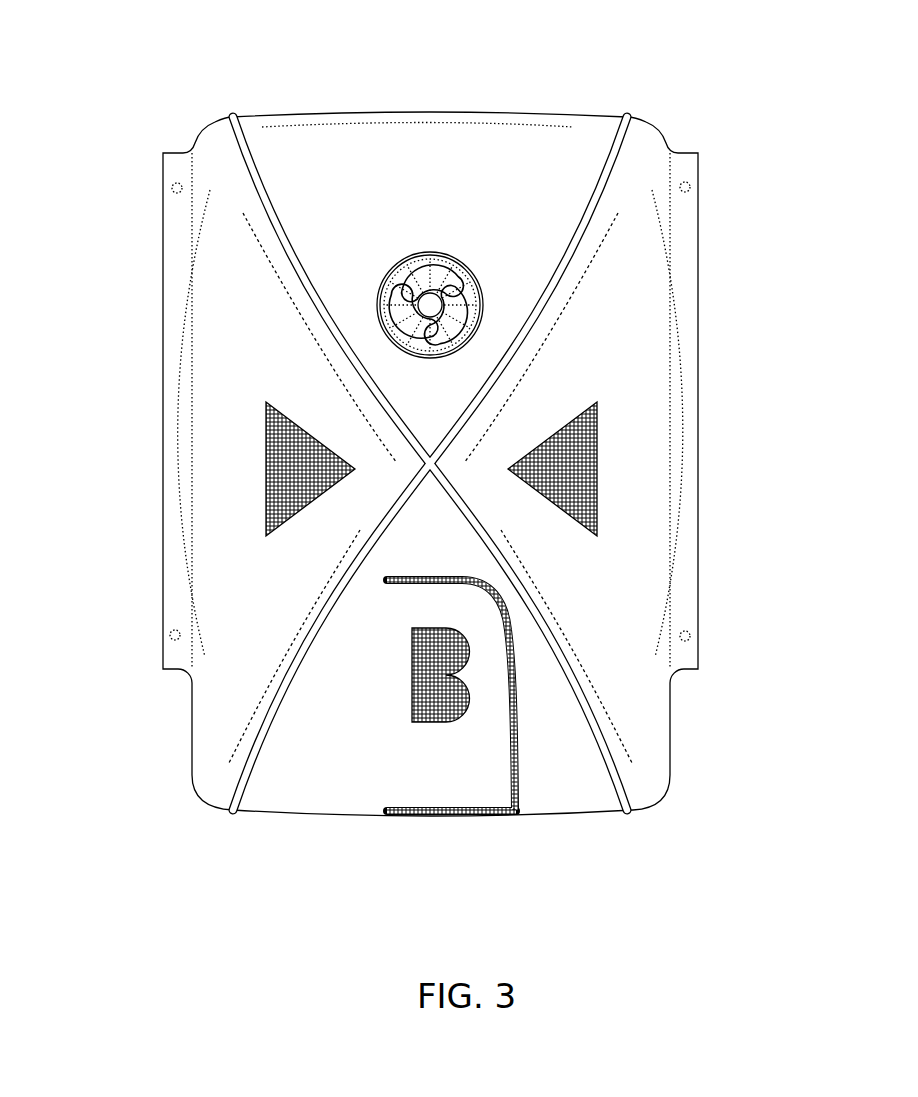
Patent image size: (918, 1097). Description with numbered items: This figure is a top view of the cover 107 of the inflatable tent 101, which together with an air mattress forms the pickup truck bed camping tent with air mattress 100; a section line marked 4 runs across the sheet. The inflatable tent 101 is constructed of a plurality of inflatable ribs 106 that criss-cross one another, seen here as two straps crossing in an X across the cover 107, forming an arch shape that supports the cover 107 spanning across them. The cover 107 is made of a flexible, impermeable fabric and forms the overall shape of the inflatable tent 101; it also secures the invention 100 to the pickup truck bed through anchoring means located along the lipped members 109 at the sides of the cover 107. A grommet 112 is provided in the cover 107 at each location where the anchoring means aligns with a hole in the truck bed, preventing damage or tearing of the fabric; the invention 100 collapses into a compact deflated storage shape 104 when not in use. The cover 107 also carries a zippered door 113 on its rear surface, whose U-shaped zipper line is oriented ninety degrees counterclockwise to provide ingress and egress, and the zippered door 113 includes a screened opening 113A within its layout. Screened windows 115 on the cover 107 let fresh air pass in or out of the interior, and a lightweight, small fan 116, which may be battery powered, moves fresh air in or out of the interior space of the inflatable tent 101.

The pickup truck bed camping tent with air mattress 100 is at (424, 412).
The inflatable tent 101 is at (424, 452).
The deflated storage shape 104 is at (718, 683).
The inflatable ribs 106 is at (590, 202).
The cover 107 is at (650, 278).
The lipped members 109 is at (193, 128).
The grommet 112 is at (176, 190).
The zippered door 113 is at (517, 782).
The screened opening 113A is at (430, 722).
The screened window 115 is at (292, 458).
The fan 116 is at (426, 280).
The section line 4 is at (229, 97).